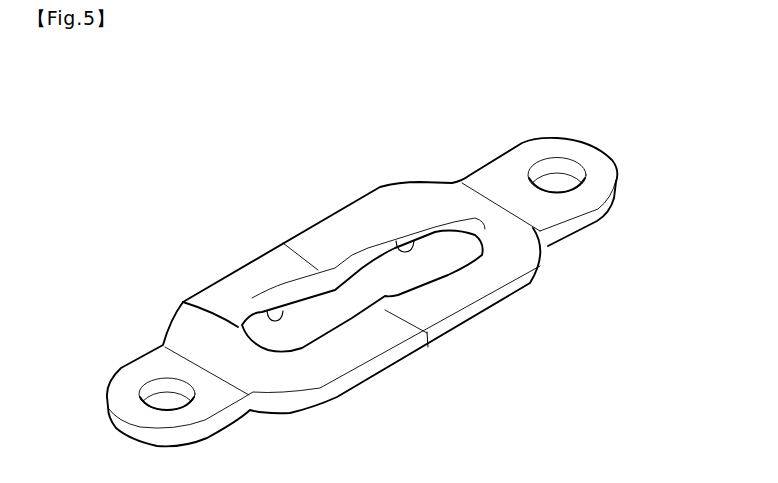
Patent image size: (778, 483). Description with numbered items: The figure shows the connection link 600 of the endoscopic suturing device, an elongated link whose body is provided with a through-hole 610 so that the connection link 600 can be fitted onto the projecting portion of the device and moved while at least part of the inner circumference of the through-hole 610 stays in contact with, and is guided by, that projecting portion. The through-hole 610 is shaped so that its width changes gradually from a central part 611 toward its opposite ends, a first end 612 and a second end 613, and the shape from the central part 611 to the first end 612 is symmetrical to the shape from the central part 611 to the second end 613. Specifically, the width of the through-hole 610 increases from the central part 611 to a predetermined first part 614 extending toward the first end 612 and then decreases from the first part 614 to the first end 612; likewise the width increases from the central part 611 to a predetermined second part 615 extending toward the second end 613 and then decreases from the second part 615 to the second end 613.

The connection link 600 is at (244, 140).
The through-hole 610 is at (302, 330).
The central part 611 is at (362, 292).
The first end 612 is at (475, 224).
The second end 613 is at (190, 306).
The first part 614 is at (408, 236).
The second part 615 is at (250, 297).